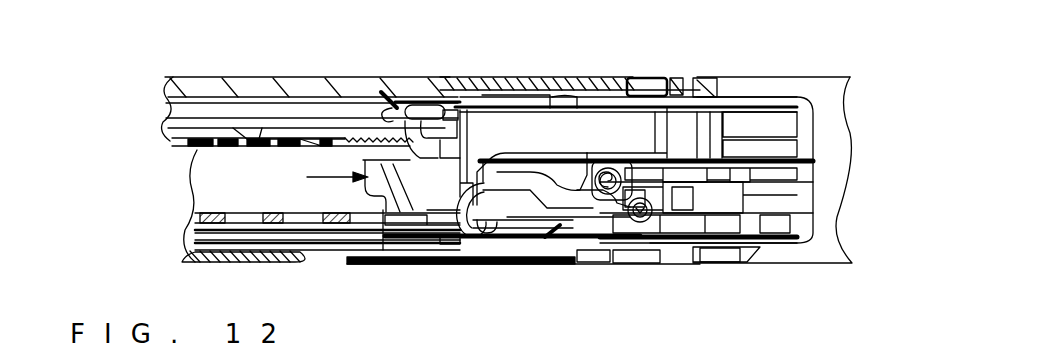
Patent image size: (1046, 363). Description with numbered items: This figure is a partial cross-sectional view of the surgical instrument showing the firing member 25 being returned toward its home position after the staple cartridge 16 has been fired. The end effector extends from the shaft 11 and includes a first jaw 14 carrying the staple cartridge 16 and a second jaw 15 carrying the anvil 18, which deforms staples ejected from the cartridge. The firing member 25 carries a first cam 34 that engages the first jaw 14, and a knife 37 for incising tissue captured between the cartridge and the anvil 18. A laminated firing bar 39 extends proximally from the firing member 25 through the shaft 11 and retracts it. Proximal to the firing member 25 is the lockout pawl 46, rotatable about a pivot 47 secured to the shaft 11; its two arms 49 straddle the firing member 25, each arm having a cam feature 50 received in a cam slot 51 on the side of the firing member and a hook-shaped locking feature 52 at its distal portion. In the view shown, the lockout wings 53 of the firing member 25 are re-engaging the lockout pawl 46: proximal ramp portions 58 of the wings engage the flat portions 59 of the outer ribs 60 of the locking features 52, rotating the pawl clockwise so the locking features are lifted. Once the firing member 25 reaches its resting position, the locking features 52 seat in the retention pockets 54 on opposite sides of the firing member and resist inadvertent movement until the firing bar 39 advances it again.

The shaft 11 is at (800, 80).
The first jaw 14 is at (240, 83).
The second jaw 15 is at (240, 265).
The staple cartridge 16 is at (185, 203).
The anvil 18 is at (317, 77).
The firing member 25 is at (403, 112).
The first cam 34 is at (417, 103).
The knife 37 is at (420, 157).
The firing bar 39 is at (598, 126).
The lockout pawl 46 is at (563, 217).
The pivot 47 is at (638, 220).
The arms 49 is at (592, 213).
The cam feature 50 is at (475, 190).
The cam slot 51 is at (395, 238).
The locking feature 52 is at (457, 232).
The lockout wings 53 is at (445, 243).
The retention pocket 54 is at (368, 162).
The proximal ramp portion 58 is at (452, 240).
The flat portion 59 is at (453, 250).
The outer rib 60 is at (455, 191).